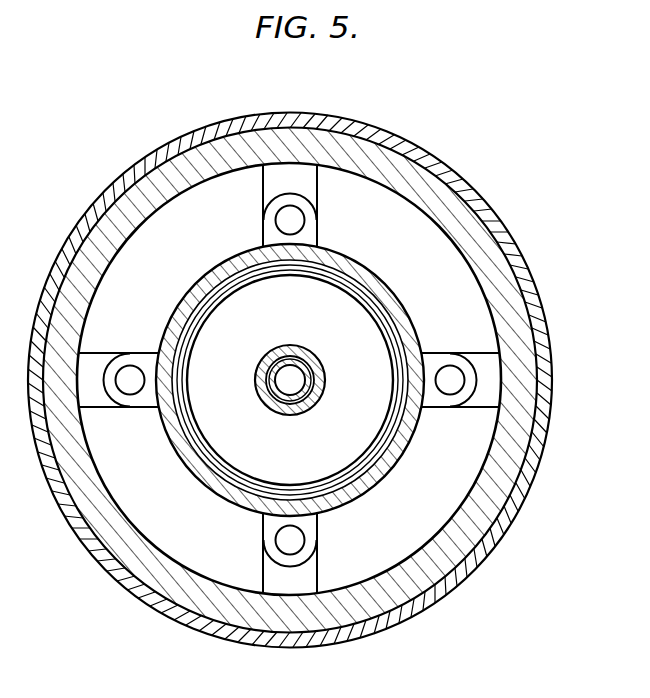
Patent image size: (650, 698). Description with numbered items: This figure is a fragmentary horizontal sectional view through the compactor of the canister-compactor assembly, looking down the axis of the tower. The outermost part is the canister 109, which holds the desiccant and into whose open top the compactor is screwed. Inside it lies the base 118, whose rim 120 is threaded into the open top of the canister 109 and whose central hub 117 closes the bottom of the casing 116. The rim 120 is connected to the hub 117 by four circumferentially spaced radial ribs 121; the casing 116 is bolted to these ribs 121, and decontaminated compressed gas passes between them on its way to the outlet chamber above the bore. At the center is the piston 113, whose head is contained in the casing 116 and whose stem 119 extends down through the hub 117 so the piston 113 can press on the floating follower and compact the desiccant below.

The canister 109 is at (532, 274).
The base 118 is at (491, 198).
The rim 120 is at (104, 268).
The radial ribs 121 is at (261, 194).
The casing 116 is at (386, 278).
The hub 117 is at (382, 361).
The piston 113 is at (325, 367).
The stem 119 is at (300, 346).